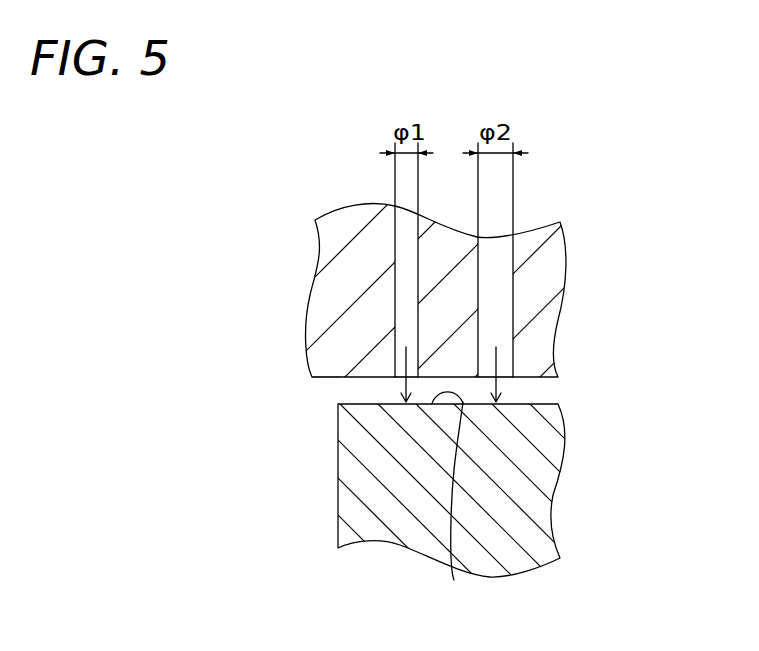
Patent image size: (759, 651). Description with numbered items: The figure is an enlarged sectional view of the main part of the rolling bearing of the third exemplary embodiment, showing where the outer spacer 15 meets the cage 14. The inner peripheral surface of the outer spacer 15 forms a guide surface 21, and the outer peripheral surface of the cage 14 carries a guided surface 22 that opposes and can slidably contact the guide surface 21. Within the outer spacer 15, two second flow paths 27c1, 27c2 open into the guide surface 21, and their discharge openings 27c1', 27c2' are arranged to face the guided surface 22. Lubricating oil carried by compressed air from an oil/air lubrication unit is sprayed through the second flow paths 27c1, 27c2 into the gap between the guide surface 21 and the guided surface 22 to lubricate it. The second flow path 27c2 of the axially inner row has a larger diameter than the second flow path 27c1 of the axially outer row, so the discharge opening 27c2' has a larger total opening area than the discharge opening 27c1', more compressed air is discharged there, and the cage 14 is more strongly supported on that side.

The outer spacer 15 is at (335, 228).
The cage 14 is at (353, 505).
The guide surface 21 is at (330, 380).
The guided surface 22 is at (454, 580).
The second flow path 27c1 is at (340, 260).
The second flow path 27c2 is at (562, 260).
The discharge opening 27c1' is at (340, 410).
The discharge opening 27c2' is at (568, 394).